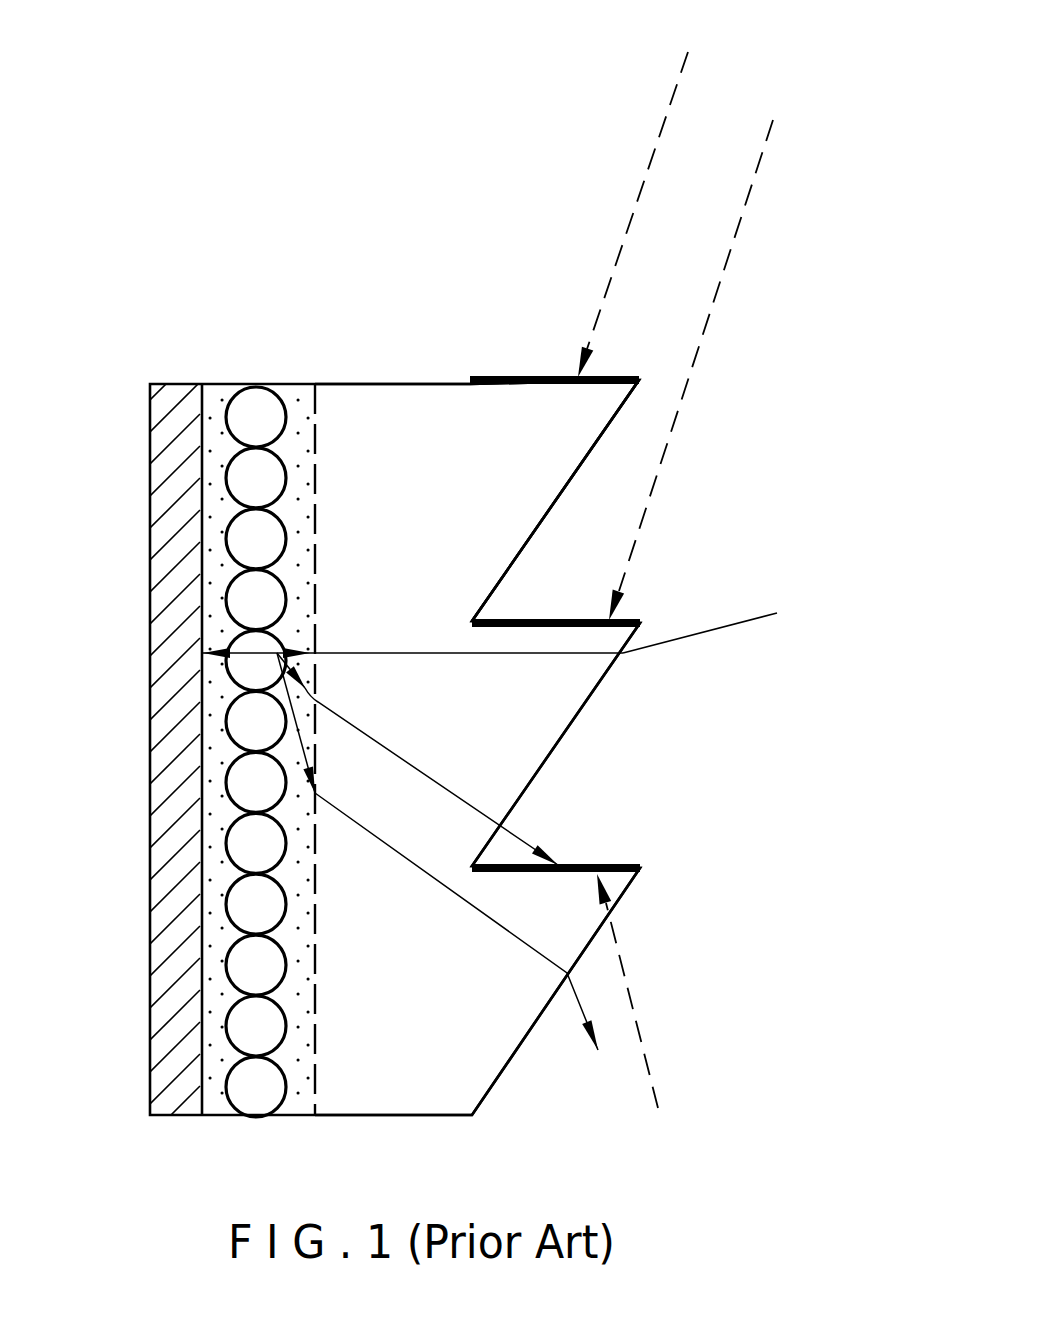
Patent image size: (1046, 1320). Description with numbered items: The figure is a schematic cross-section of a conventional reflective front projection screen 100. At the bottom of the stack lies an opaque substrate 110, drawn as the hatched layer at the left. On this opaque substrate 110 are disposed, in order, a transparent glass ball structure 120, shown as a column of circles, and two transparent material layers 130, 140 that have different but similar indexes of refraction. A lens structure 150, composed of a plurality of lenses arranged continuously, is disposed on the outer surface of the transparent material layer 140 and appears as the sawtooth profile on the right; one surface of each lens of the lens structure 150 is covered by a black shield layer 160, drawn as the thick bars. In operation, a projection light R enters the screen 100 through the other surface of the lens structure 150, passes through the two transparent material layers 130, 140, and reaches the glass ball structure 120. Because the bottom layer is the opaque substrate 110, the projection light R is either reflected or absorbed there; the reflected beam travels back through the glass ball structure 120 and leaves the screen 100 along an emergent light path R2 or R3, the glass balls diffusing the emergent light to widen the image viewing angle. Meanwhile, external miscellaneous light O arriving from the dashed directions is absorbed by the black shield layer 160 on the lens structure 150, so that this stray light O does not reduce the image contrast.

The reflective front projection screen 100 is at (169, 146).
The opaque substrate 110 is at (173, 832).
The transparent glass ball structure 120 is at (262, 403).
The transparent material layer 130 is at (302, 403).
The transparent material layer 140 is at (351, 403).
The lens structure 150 is at (581, 470).
The black shield layer 160 is at (605, 378).
The external miscellaneous light O is at (682, 578).
The projection light R is at (777, 613).
The emergent light path R2 is at (417, 759).
The emergent light path R3 is at (437, 851).